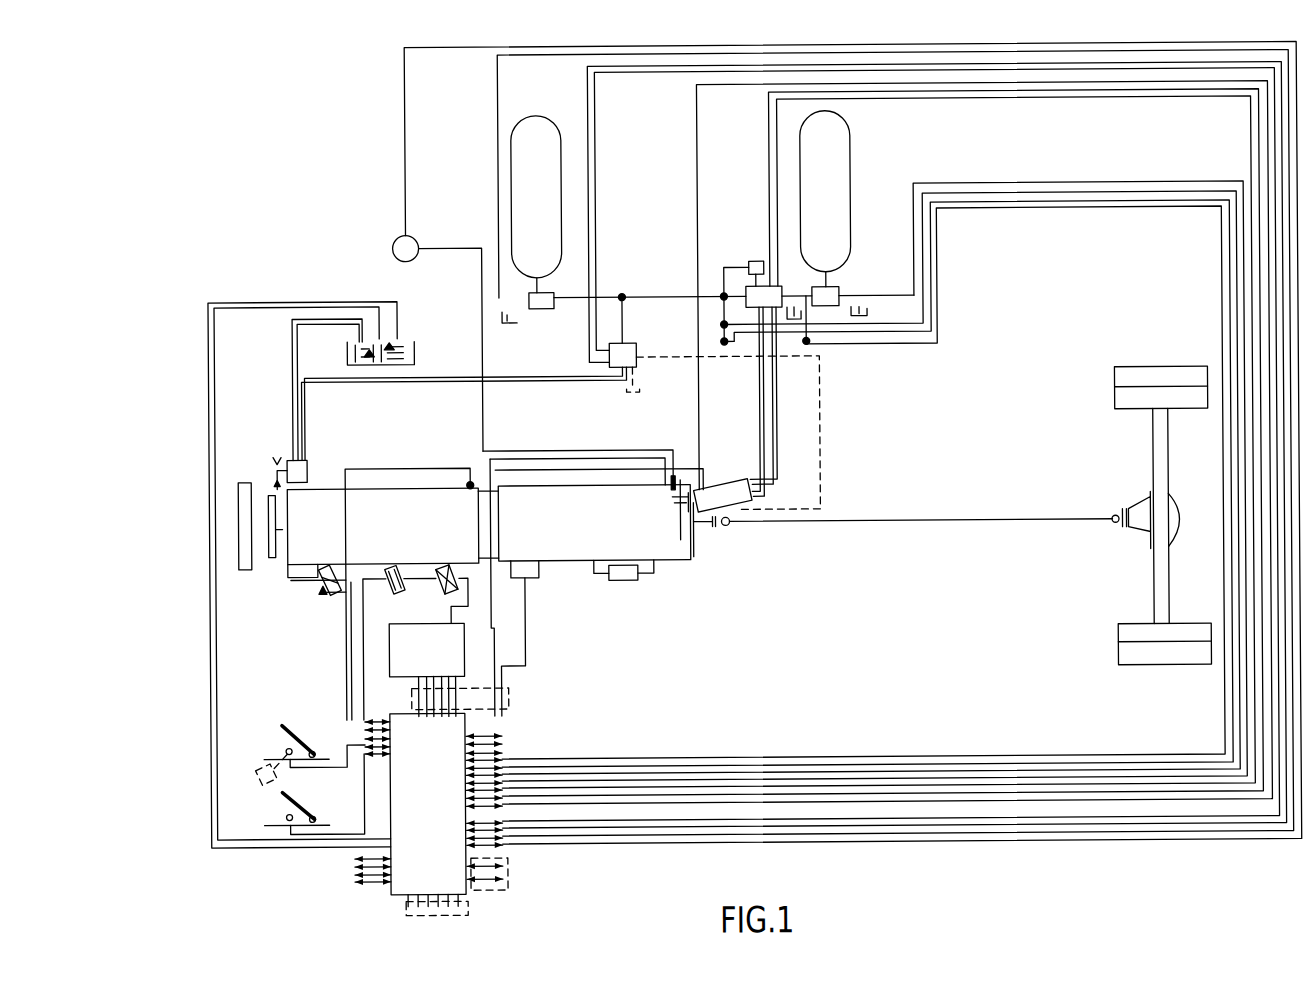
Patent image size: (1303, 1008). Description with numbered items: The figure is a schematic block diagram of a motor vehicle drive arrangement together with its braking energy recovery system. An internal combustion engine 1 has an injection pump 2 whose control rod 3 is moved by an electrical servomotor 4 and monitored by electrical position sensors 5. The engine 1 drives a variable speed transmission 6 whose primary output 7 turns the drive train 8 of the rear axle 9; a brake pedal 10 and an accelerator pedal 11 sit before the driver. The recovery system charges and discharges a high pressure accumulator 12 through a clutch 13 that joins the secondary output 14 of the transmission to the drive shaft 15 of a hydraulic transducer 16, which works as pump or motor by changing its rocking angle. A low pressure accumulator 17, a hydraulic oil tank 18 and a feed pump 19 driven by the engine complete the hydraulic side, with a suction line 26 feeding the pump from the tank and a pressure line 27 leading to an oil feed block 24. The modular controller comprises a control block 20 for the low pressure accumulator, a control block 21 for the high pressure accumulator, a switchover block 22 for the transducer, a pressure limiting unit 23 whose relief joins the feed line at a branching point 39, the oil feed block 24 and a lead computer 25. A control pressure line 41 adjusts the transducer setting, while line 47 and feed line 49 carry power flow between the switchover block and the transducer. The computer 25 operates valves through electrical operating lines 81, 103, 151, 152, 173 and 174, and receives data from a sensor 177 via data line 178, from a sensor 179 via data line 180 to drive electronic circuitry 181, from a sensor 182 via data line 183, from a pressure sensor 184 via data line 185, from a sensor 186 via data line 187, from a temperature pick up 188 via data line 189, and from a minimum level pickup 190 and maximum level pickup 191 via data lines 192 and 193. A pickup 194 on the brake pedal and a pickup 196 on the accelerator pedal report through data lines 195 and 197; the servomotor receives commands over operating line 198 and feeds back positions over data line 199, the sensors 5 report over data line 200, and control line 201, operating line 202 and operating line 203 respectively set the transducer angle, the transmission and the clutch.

The internal combustion engine 1 is at (398, 529).
The injection pump 2 is at (288, 572).
The control rod 3 is at (318, 598).
The electrical servomotor 4 is at (400, 590).
The electrical position sensors 5 is at (440, 590).
The variable speed transmission 6 is at (532, 551).
The primary output 7 is at (700, 545).
The drive train 8 is at (968, 523).
The rear axle 9 is at (1150, 590).
The brake pedal 10 is at (288, 745).
The accelerator pedal 11 is at (290, 812).
The high pressure accumulator 12 is at (814, 198).
The clutch 13 is at (688, 485).
The secondary output 14 is at (672, 507).
The drive shaft 15 is at (705, 513).
The hydraulic transducer 16 is at (738, 482).
The low pressure accumulator 17 is at (527, 198).
The hydraulic oil tank 18 is at (417, 352).
The feed pump 19 is at (308, 475).
The control block 20 is at (541, 310).
The control block 21 is at (838, 292).
The switchover block 22 is at (757, 290).
The pressure limiting unit 23 is at (757, 262).
The oil feed block 24 is at (608, 358).
The lead computer 25 is at (412, 773).
The suction line 26 is at (291, 352).
The pressure line 27 is at (466, 382).
The branching point 39 is at (623, 292).
The control pressure line 41 is at (822, 442).
The line 47 is at (777, 445).
The feed line 49 is at (758, 392).
The electrical operating line 81 is at (498, 80).
The electrical operating line 103 is at (913, 215).
The operating line 151 is at (769, 125).
The operating line 152 is at (777, 158).
The operating line 173 is at (588, 84).
The operating line 174 is at (600, 101).
The sensor 177 is at (700, 478).
The data line 178 is at (405, 70).
The sensor 179 is at (670, 485).
The data line 180 is at (487, 603).
The drive electronic circuitry 181 is at (409, 663).
The sensor 182 is at (470, 480).
The data line 183 is at (395, 466).
The pressure sensor 184 is at (812, 345).
The data line 185 is at (940, 288).
The sensor 186 is at (720, 335).
The data line 187 is at (934, 260).
The temperature pick up 188 is at (723, 323).
The data line 189 is at (926, 232).
The minimum level pickup 190 is at (372, 352).
The maximum level pickup 191 is at (398, 352).
The data line 192 is at (278, 302).
The data line 193 is at (240, 298).
The pickup 194 is at (282, 742).
The data line 195 is at (338, 752).
The pickup 196 is at (282, 810).
The data line 197 is at (360, 827).
The operating line 198 is at (346, 623).
The data line 199 is at (343, 642).
The data line 200 is at (468, 582).
The control line 201 is at (697, 135).
The operating line 202 is at (505, 665).
The operating line 203 is at (495, 638).